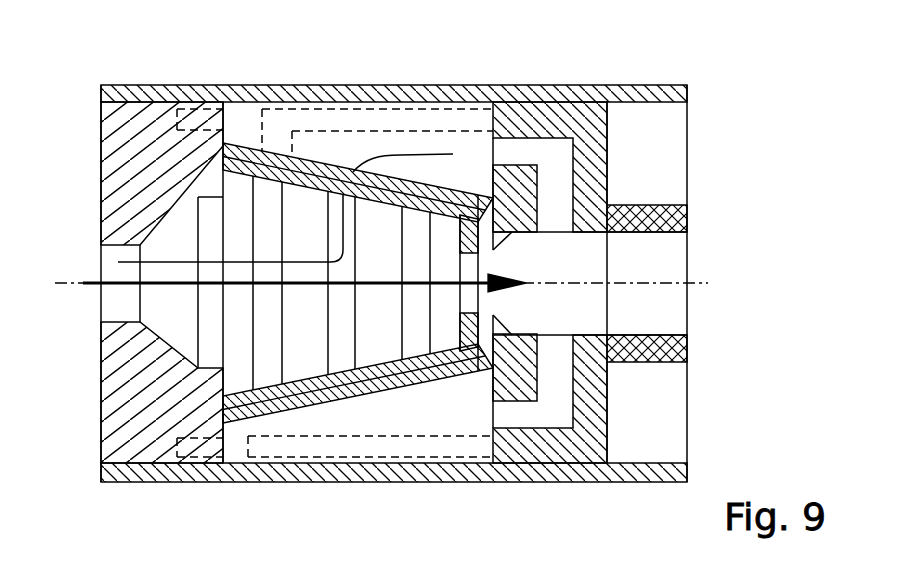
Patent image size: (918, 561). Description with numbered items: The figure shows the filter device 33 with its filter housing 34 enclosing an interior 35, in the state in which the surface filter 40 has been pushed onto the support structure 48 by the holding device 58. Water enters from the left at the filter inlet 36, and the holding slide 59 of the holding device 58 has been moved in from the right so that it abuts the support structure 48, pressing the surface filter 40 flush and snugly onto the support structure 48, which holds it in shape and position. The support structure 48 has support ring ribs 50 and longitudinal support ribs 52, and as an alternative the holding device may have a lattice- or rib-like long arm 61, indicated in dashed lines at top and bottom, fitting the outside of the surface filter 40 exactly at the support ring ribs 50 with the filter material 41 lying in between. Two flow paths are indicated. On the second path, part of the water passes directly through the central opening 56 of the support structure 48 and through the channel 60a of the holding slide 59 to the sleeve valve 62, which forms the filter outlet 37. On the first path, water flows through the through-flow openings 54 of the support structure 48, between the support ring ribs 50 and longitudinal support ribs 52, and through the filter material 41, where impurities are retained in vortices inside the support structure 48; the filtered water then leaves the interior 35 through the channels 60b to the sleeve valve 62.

The filter device 33 is at (714, 91).
The filter housing 34 is at (563, 88).
The interior 35 is at (363, 143).
The filter inlet 36 is at (165, 318).
The filter outlet 37 is at (667, 317).
The surface filter 40 is at (383, 422).
The filter material 41 is at (302, 160).
The support structure 48 is at (246, 182).
The support ring ribs 50 is at (265, 372).
The longitudinal support ribs 52 is at (245, 402).
The through-flow openings 54 is at (345, 362).
The central opening 56 is at (472, 300).
The holding device 58 is at (664, 154).
The holding slide 59 is at (607, 180).
The channel 60a is at (573, 262).
The channels 60b is at (518, 150).
The arm 61 is at (425, 110).
The sleeve valve 62 is at (650, 361).